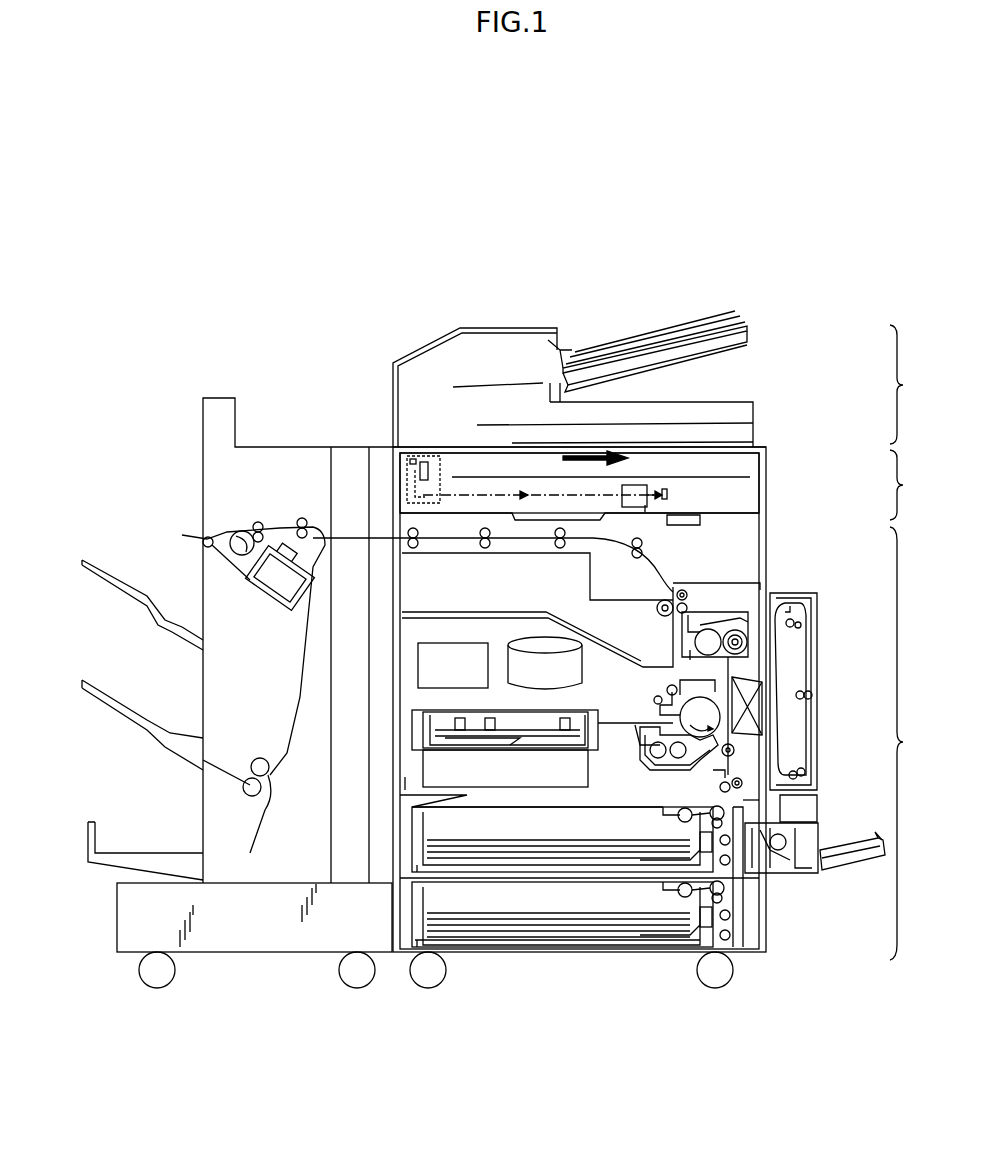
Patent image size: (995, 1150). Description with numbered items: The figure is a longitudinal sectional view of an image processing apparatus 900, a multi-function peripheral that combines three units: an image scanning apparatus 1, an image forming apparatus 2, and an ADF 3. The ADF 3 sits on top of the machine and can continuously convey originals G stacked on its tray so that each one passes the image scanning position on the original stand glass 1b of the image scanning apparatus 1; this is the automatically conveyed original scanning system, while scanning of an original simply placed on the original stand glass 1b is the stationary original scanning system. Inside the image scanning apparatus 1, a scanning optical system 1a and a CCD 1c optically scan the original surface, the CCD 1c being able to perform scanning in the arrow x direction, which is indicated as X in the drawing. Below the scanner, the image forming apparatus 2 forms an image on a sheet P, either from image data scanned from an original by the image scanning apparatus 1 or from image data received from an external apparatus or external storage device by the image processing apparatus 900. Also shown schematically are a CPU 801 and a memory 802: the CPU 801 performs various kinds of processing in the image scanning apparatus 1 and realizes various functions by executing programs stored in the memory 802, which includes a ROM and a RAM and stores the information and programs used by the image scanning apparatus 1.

The image processing apparatus 900 is at (425, 306).
The original G is at (655, 331).
The ADF 3 is at (662, 386).
The image scanning apparatus 1 is at (665, 487).
The image forming apparatus 2 is at (622, 743).
The scanning optical system 1a is at (440, 461).
The original stand glass 1b is at (743, 457).
The CCD 1c is at (667, 493).
The arrow x direction X is at (595, 465).
The CPU 801 is at (448, 643).
The memory 802 is at (542, 637).
The sheet P is at (575, 910).